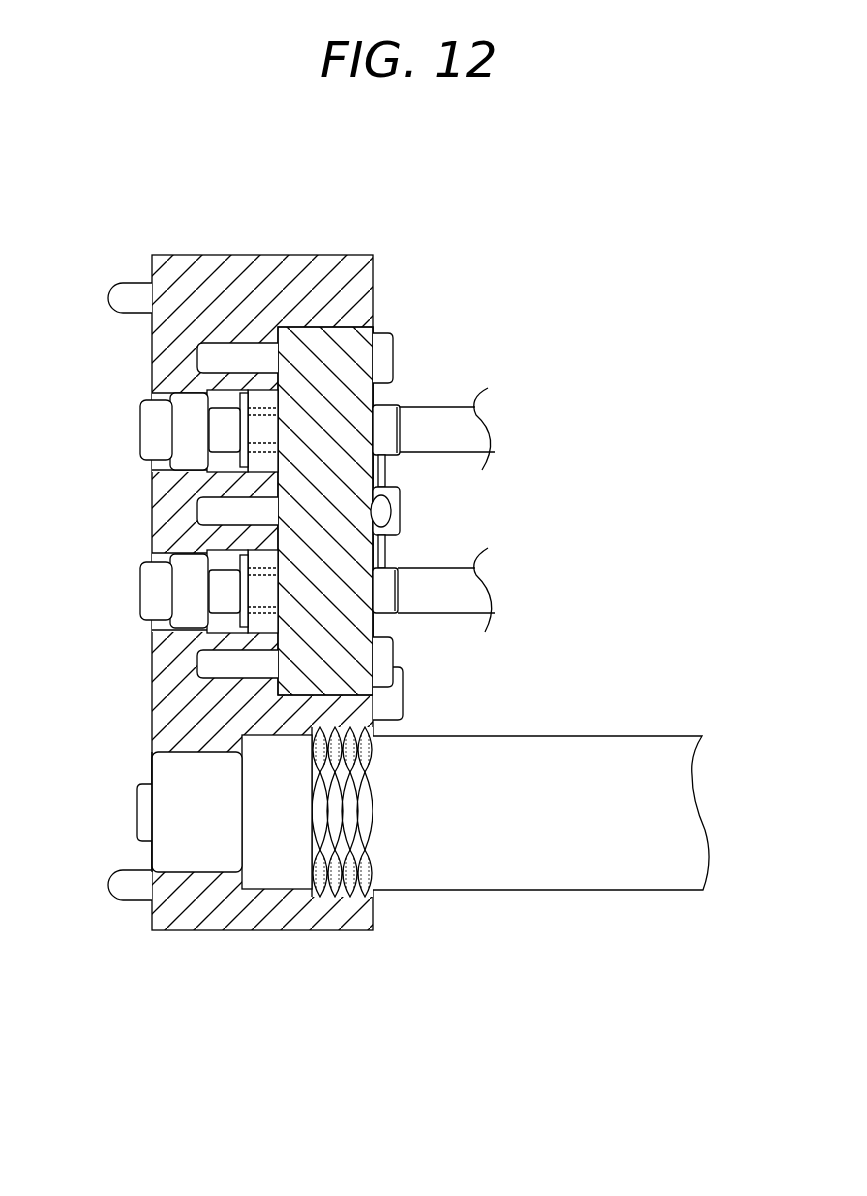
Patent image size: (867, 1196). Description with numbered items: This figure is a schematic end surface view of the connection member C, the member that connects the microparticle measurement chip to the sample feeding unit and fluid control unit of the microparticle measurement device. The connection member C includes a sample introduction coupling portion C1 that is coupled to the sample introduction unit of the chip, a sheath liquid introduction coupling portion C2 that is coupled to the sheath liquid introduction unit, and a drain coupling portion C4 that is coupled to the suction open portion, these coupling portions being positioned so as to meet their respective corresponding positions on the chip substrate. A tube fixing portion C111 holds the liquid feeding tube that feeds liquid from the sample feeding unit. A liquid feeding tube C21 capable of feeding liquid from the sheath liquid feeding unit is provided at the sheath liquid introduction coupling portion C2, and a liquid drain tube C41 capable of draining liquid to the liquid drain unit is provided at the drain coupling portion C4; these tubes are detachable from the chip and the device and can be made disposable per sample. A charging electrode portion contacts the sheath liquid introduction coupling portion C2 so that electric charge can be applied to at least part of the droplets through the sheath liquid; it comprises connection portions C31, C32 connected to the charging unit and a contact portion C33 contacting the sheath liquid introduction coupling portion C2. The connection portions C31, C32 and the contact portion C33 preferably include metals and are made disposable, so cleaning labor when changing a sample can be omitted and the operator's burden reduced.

The connection member C is at (743, 292).
The sample introduction coupling portion C1 is at (373, 948).
The tube fixing portion C111 is at (638, 752).
The sheath liquid introduction coupling portion C2 is at (375, 617).
The liquid feeding tube C21 is at (428, 592).
The connection portion C31 is at (389, 512).
The connection portion C32 is at (292, 392).
The contact portion C33 is at (225, 595).
The drain coupling portion C4 is at (375, 402).
The liquid drain tube C41 is at (440, 423).